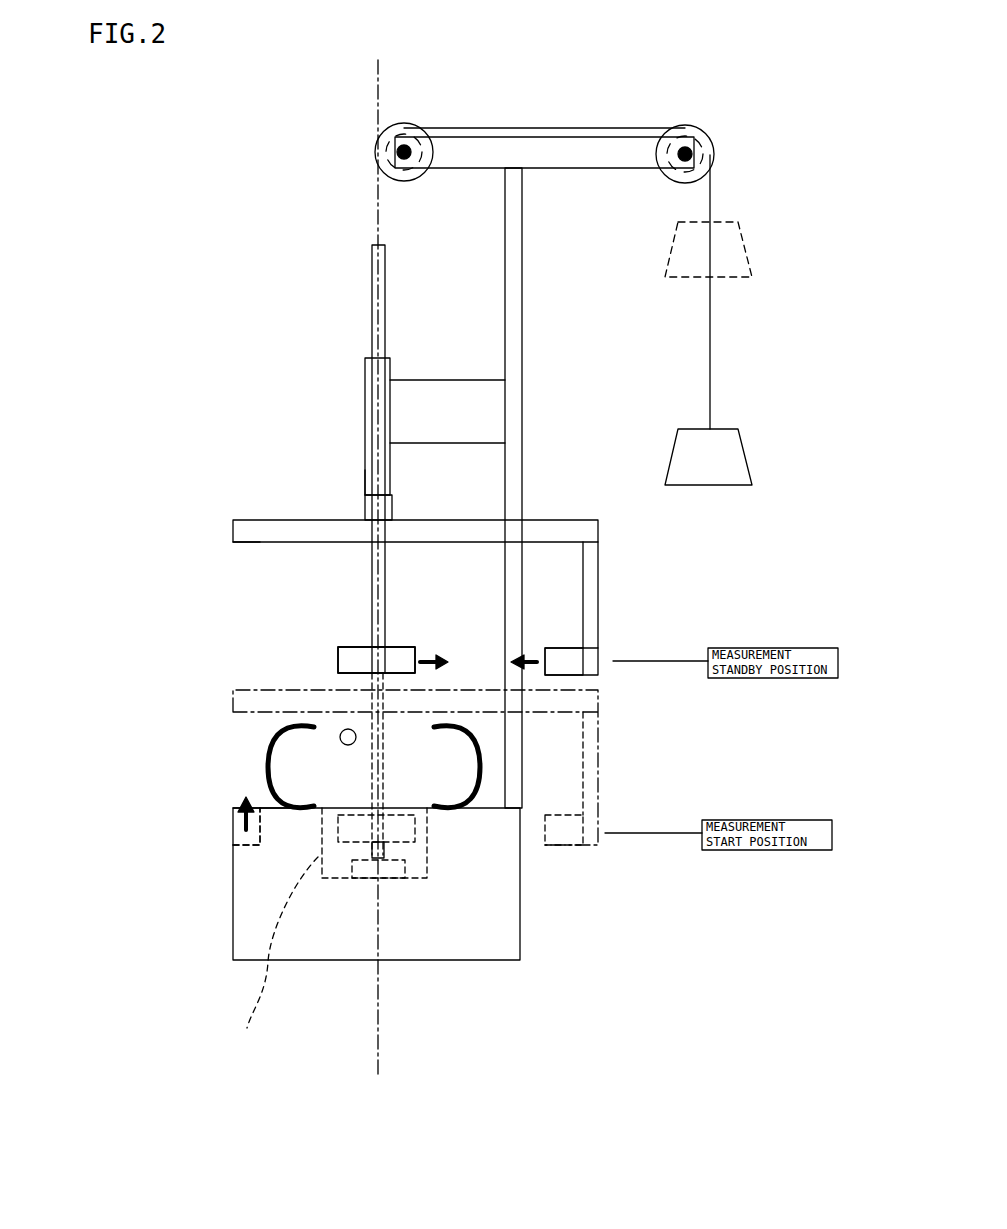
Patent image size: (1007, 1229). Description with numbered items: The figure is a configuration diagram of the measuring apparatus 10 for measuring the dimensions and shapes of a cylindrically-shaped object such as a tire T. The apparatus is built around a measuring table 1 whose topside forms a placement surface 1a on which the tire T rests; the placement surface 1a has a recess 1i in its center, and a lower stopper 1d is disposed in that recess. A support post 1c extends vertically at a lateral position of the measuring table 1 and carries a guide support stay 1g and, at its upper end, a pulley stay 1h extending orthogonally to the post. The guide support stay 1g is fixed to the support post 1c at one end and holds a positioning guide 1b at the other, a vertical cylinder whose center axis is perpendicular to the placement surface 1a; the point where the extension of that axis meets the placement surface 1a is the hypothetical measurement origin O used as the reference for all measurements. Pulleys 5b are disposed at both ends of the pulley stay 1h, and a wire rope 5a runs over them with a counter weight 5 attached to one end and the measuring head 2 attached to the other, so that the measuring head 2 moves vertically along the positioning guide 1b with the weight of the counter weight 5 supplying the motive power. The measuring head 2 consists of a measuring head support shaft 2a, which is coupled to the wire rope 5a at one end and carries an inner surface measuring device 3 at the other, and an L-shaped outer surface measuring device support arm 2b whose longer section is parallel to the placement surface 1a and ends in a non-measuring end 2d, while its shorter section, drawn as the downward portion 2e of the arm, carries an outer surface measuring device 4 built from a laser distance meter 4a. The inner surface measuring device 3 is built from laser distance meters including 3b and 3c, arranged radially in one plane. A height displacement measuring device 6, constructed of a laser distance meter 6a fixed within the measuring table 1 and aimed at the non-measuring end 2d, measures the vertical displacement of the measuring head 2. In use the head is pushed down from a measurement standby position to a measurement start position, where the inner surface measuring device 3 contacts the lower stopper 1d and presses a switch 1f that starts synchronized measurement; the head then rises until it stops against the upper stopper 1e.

The measuring apparatus 10 is at (510, 28).
The measuring table 1 is at (472, 963).
The placement surface 1a is at (270, 805).
The positioning guide 1b is at (365, 385).
The support post 1c is at (510, 472).
The lower stopper 1d is at (390, 878).
The upper stopper 1e is at (365, 492).
The switch 1f is at (385, 850).
The guide support stay 1g is at (455, 410).
The pulley stay 1h is at (545, 152).
The recess 1i is at (273, 957).
The measuring head 2 is at (325, 518).
The measuring head support shaft 2a is at (372, 292).
The outer surface measuring device support arm 2b is at (290, 528).
The non-measuring end 2d is at (255, 543).
The arm 2e is at (590, 665).
The inner surface measuring device 3 is at (400, 665).
The laser distance meter 3b is at (340, 663).
The laser distance meter 3c is at (355, 656).
The outer surface measuring device 4 is at (580, 687).
The laser distance meter 4a is at (564, 661).
The counter weight 5 is at (720, 456).
The wire rope 5a is at (710, 333).
The pulley 5b is at (410, 174).
The height displacement measuring device 6 is at (240, 832).
The laser distance meter 6a is at (246, 826).
The tire T is at (270, 760).
The measurement origin O is at (378, 810).